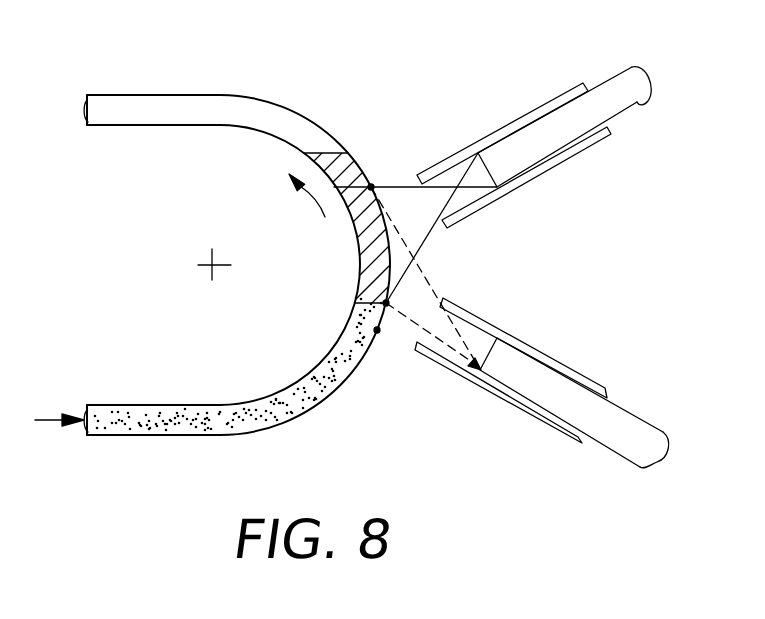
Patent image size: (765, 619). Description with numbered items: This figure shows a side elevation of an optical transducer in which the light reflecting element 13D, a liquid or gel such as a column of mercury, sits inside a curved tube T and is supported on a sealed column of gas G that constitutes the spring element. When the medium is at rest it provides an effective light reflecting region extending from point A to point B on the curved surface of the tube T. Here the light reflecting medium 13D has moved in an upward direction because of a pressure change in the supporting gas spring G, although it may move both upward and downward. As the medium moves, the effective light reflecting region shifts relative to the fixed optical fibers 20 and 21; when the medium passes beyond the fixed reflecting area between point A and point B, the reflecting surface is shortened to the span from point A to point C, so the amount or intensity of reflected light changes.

The curved tube T is at (232, 96).
The point A is at (371, 187).
The point B is at (377, 330).
The point C is at (386, 303).
The column of gas G is at (305, 400).
The light reflecting element 13D is at (360, 258).
The optical fiber 20 is at (604, 93).
The optical fiber 21 is at (633, 430).